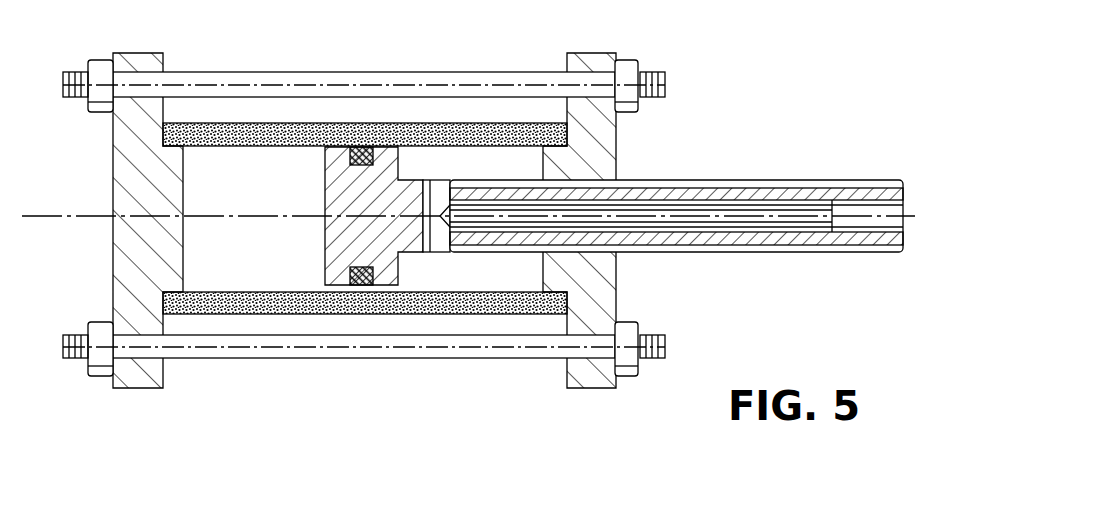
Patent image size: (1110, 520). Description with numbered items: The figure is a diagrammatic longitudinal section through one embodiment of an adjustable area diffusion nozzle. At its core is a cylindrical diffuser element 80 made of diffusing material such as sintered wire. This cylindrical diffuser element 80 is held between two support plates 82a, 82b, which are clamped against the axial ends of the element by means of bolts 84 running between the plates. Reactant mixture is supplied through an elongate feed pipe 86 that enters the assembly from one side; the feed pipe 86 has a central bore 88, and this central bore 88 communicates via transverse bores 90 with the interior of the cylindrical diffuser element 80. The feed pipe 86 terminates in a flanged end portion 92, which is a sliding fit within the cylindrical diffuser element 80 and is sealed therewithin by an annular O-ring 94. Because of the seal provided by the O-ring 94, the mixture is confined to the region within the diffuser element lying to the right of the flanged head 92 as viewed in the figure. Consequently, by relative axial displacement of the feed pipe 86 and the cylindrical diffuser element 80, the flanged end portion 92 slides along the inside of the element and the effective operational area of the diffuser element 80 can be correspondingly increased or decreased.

The cylindrical diffuser element 80 is at (250, 125).
The support plate 82a is at (120, 178).
The support plate 82b is at (603, 148).
The bolt 84 is at (503, 80).
The elongate feed pipe 86 is at (797, 195).
The central bore 88 is at (800, 226).
The transverse bore 90 is at (443, 240).
The flanged end portion 92 is at (312, 292).
The annular O-ring 94 is at (358, 147).